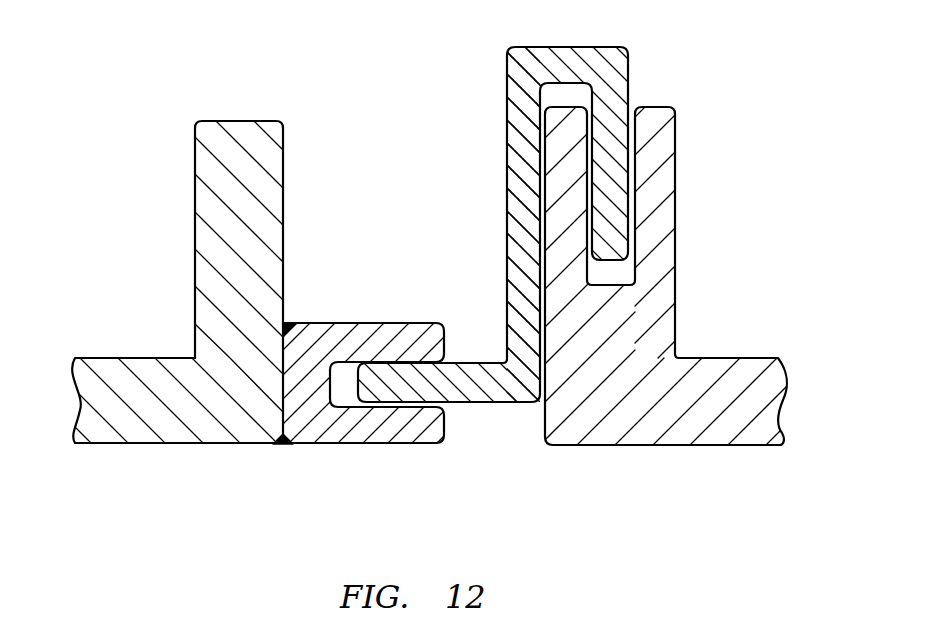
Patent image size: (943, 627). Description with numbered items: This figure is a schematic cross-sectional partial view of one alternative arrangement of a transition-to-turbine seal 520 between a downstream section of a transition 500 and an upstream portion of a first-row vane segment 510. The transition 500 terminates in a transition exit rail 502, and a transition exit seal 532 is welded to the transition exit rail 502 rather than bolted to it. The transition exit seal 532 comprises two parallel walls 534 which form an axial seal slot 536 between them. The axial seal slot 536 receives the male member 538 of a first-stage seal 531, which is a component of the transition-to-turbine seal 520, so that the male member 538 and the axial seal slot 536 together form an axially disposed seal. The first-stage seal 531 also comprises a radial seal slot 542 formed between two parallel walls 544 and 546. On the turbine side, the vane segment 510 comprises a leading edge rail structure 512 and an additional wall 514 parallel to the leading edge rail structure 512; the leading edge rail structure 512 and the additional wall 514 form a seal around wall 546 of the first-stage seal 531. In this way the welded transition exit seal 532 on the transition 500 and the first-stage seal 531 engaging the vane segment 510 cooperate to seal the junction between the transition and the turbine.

The transition 500 is at (135, 357).
The transition exit rail 502 is at (195, 187).
The row 1 vane segment 510 is at (712, 445).
The leading edge rail structure 512 is at (560, 222).
The additional wall 514 is at (675, 288).
The transition-to-turbine seal 520 is at (525, 462).
The stage-1 seal 531 is at (507, 87).
The transition exit seal 532 is at (337, 293).
The parallel walls 534 is at (373, 347).
The axial seal slot 536 is at (347, 395).
The male member 538 is at (472, 365).
The radial seal slot 542 is at (565, 97).
The parallel wall 544 is at (528, 152).
The parallel wall 546 is at (615, 178).